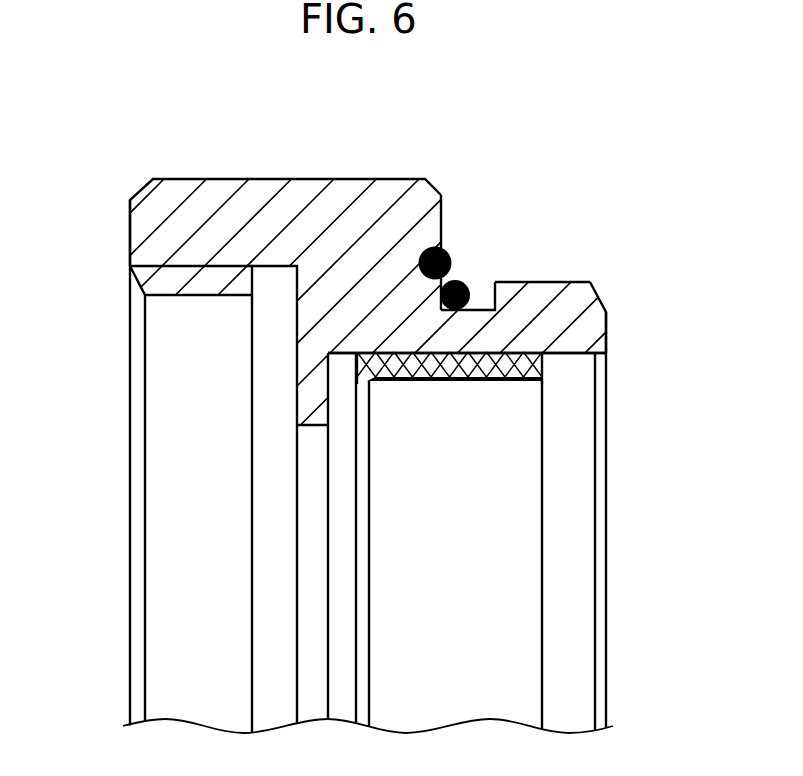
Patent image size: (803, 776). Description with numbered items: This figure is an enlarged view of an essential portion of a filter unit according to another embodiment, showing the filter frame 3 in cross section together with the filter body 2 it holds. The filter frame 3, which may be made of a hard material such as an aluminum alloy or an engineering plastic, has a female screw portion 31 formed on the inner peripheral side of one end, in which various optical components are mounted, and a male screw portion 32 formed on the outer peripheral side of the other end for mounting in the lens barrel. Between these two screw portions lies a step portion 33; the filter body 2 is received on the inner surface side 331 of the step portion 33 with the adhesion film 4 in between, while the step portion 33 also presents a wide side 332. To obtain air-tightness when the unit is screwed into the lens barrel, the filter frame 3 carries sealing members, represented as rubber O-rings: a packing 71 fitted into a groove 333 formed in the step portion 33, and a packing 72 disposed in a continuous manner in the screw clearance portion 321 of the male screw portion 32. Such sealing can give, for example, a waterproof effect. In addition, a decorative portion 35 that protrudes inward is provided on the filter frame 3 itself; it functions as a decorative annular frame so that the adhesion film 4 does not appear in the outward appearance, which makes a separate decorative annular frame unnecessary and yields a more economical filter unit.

The filter body 2 is at (485, 568).
The filter frame 3 is at (412, 178).
The adhesion film 4 is at (530, 363).
The female screw portion 31 is at (197, 283).
The male screw portion 32 is at (565, 297).
The step portion 33 is at (372, 322).
The decorative portion 35 is at (312, 382).
The packing 71 is at (443, 250).
The packing 72 is at (478, 308).
The screw clearance portion 321 is at (495, 282).
The inner surface side of the step portion 331 is at (498, 356).
The wide side of the step portion 332 is at (297, 303).
The groove 333 is at (422, 263).